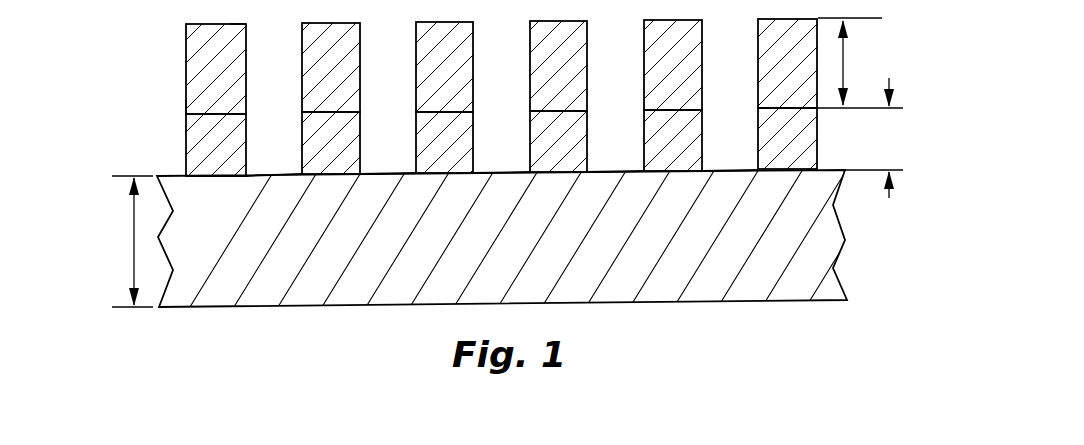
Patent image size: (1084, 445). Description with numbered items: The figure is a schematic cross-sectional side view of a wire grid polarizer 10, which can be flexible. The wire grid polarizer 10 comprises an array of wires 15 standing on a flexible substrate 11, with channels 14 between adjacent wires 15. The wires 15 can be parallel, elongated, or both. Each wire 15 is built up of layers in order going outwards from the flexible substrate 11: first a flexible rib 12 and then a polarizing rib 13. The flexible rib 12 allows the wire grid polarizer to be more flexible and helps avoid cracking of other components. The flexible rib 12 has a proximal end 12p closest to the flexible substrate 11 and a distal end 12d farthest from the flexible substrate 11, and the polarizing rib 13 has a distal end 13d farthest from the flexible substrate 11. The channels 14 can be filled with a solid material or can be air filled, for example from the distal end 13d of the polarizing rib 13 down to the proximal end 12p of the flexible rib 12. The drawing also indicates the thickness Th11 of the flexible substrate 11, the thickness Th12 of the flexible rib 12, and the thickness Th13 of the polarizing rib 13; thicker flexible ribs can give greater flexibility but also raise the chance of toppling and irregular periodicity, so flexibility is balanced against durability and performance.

The wire grid polarizer 10 is at (503, 158).
The flexible substrate 11 is at (488, 247).
The flexible rib 12 is at (202, 157).
The distal end of the flexible rib 12d is at (199, 111).
The proximal end of the flexible rib 12p is at (213, 178).
The polarizing rib 13 is at (202, 85).
The distal end of the polarizing rib 13d is at (237, 28).
The channel 14 is at (259, 106).
The wire 15 is at (430, 118).
The thickness of the flexible substrate Th11 is at (136, 241).
The thickness of the flexible rib Th12 is at (882, 138).
The thickness of the polarizing rib Th13 is at (860, 63).